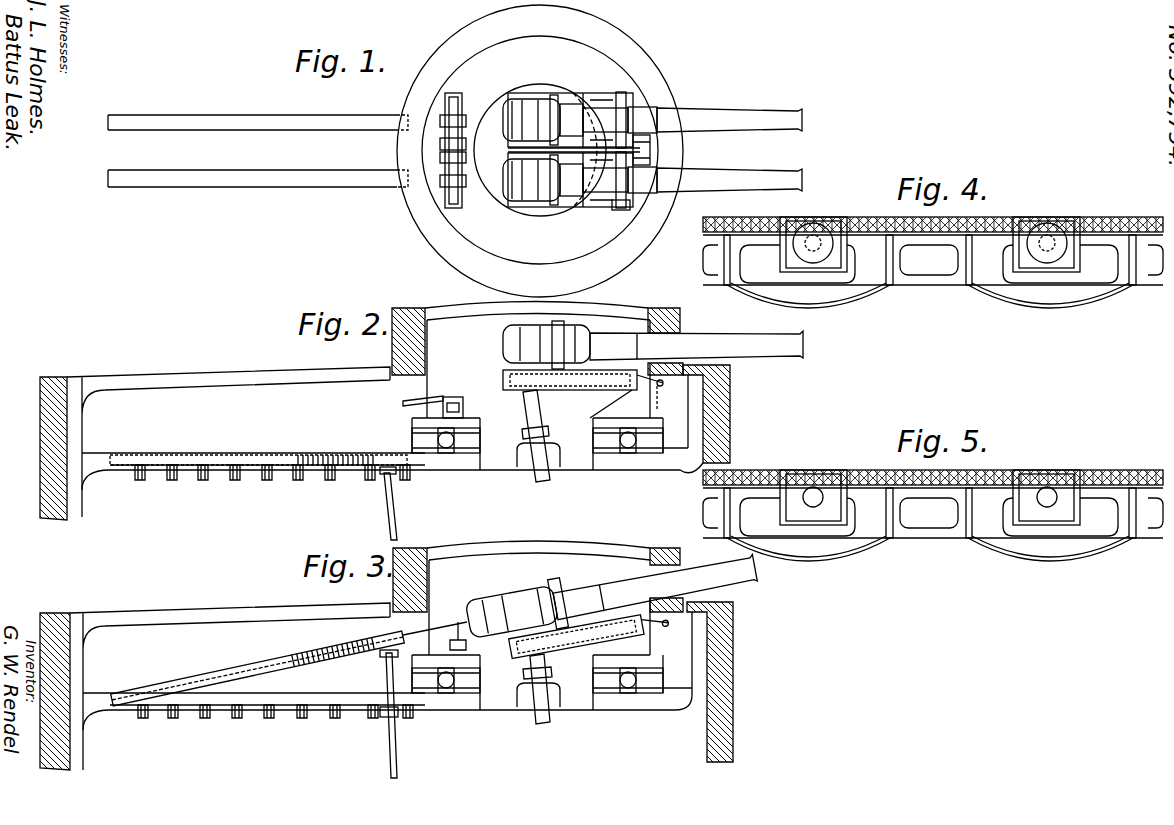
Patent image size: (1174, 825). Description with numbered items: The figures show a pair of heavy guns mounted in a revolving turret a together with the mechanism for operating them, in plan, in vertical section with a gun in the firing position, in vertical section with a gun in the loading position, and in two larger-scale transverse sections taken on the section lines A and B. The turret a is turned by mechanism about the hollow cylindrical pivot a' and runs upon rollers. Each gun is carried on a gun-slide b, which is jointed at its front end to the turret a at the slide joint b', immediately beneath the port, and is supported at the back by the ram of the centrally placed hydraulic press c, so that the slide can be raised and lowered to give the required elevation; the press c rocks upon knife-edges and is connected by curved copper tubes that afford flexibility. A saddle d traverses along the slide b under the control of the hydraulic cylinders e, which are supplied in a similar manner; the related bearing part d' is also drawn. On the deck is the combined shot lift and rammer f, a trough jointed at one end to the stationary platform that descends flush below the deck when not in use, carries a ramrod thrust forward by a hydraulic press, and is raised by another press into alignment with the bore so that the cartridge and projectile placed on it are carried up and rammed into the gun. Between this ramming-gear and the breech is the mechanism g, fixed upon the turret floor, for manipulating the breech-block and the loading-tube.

In FIG. 1, the turret a is at (540, 151).
In FIG. 2, the turret a is at (537, 360).
In FIG. 3, the turret a is at (538, 598).
In FIG. 2, the hollow cylindrical pivot a' is at (537, 439).
In FIG. 3, the hollow cylindrical pivot a' is at (537, 677).
In FIG. 1, the gun-slide b is at (570, 146).
In FIG. 2, the gun-slide b is at (570, 393).
In FIG. 3, the gun-slide b is at (576, 636).
In FIG. 2, the slide joint b' is at (661, 392).
In FIG. 3, the slide joint b' is at (662, 625).
In FIG. 2, the hydraulic press c is at (570, 378).
In FIG. 3, the hydraulic press c is at (576, 635).
In FIG. 1, the saddle d is at (653, 140).
In FIG. 1, the trunnion bearing cap d' is at (618, 213).
In FIG. 2, the hydraulic cylinders e is at (538, 436).
In FIG. 3, the hydraulic cylinders e is at (538, 689).
In FIG. 2, the combined shot lift and rammer f is at (392, 503).
In FIG. 3, the combined shot lift and rammer f is at (289, 700).
In FIG. 1, the breech-block and loading-tube mechanism g is at (445, 150).
In FIG. 2, the breech-block and loading-tube mechanism g is at (433, 398).
In FIG. 2, the section line A A is at (353, 488).
In FIG. 2, the section line B B is at (188, 488).